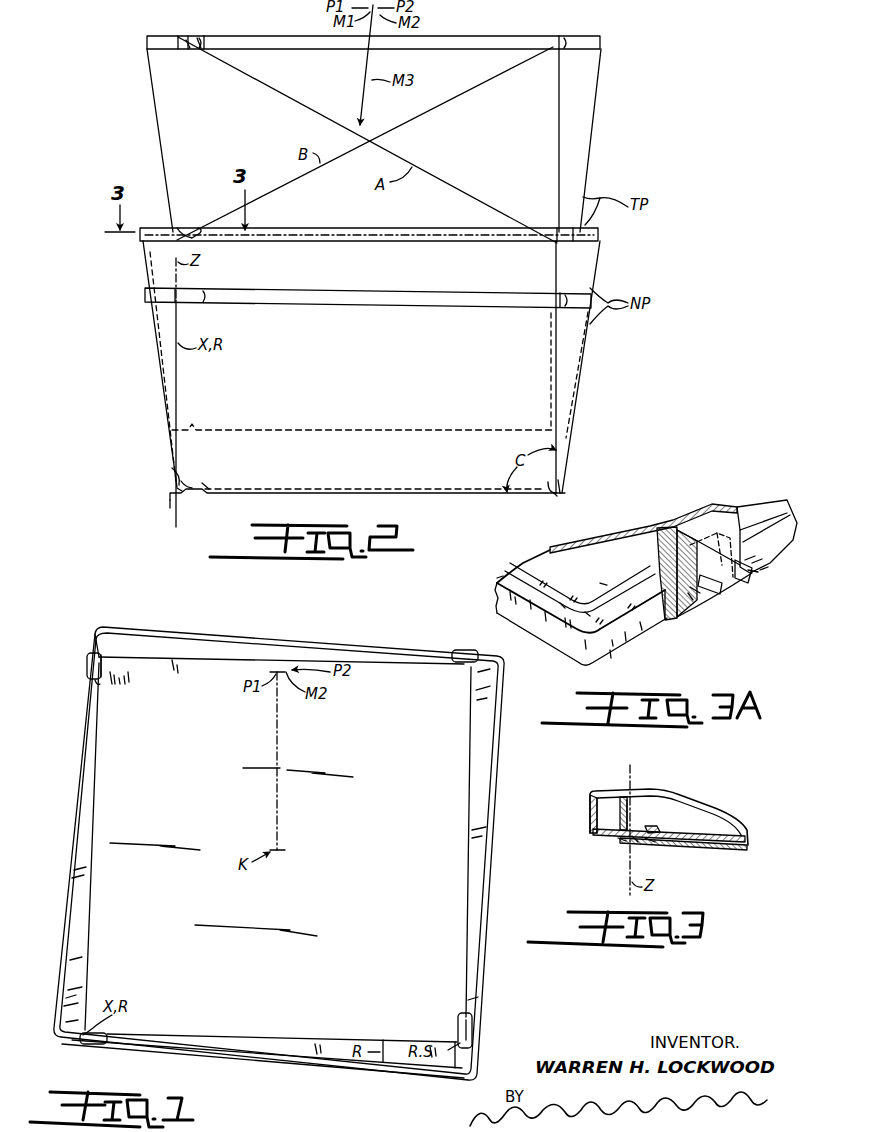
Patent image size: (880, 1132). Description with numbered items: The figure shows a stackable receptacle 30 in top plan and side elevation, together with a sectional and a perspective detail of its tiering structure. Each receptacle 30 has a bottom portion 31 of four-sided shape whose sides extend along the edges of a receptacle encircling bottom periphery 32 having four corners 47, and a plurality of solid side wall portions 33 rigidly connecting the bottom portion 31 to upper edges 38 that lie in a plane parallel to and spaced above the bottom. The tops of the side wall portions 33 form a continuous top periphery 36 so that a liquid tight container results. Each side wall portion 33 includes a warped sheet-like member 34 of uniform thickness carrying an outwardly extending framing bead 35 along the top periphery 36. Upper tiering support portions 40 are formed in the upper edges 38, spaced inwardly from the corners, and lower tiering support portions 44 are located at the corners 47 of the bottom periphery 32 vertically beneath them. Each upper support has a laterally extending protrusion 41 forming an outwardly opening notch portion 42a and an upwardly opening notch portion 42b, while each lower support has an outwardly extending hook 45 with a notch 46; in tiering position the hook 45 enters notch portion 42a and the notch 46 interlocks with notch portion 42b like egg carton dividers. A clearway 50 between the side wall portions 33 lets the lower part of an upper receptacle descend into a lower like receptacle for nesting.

In FIG. 2, the receptacle 30 is at (145, 315).
In FIG. 1, the receptacle 30 is at (302, 638).
In FIG. 2, the bottom portion 31 is at (417, 494).
In FIG. 1, the bottom portion 31 is at (373, 905).
In FIG. 2, the bottom periphery 32 is at (209, 494).
In FIG. 3a, the bottom periphery 32 is at (589, 607).
In FIG. 2, the side wall portion 33 is at (530, 122).
In FIG. 1, the side wall portion 33 is at (177, 648).
In FIG. 3a, the side wall portion 33 is at (768, 512).
In FIG. 3, the side wall portion 33 is at (627, 776).
In FIG. 2, the sheet-like member 34 is at (466, 152).
In FIG. 3, the sheet-like member 34 is at (723, 830).
In FIG. 2, the framing bead 35 is at (466, 36).
In FIG. 3a, the framing bead 35 is at (598, 658).
In FIG. 3, the framing bead 35 is at (720, 848).
In FIG. 2, the top periphery 36 is at (583, 48).
In FIG. 1, the top periphery 36 is at (96, 630).
In FIG. 3a, the top periphery 36 is at (617, 620).
In FIG. 3, the top periphery 36 is at (623, 813).
In FIG. 2, the upper edges 38 is at (270, 36).
In FIG. 1, the upper edges 38 is at (188, 635).
In FIG. 3a, the upper edges 38 is at (500, 582).
In FIG. 2, the upper tiering support portion 40 is at (210, 43).
In FIG. 1, the upper tiering support portion 40 is at (462, 656).
In FIG. 3a, the upper tiering support portion 40 is at (743, 568).
In FIG. 2, the protrusion 41 is at (188, 33).
In FIG. 1, the protrusion 41 is at (102, 670).
In FIG. 3a, the protrusion 41 is at (660, 529).
In FIG. 3, the protrusion 41 is at (635, 827).
In FIG. 2, the outwardly opening notch portion 42a is at (188, 38).
In FIG. 1, the outwardly opening notch portion 42a is at (467, 1036).
In FIG. 3a, the outwardly opening notch portion 42a is at (712, 582).
In FIG. 3, the outwardly opening notch portion 42a is at (620, 838).
In FIG. 2, the upwardly opening notch portion 42b is at (202, 37).
In FIG. 1, the upwardly opening notch portion 42b is at (98, 680).
In FIG. 3a, the upwardly opening notch portion 42b is at (755, 570).
In FIG. 3, the upwardly opening notch portion 42b is at (652, 828).
In FIG. 2, the lower tiering support portion 44 is at (184, 486).
In FIG. 3a, the lower tiering support portion 44 is at (690, 587).
In FIG. 2, the hook 45 is at (174, 483).
In FIG. 3a, the hook 45 is at (688, 594).
In FIG. 3, the hook 45 is at (635, 842).
In FIG. 2, the notch 46 is at (202, 483).
In FIG. 3a, the notch 46 is at (729, 542).
In FIG. 3, the notch 46 is at (647, 840).
In FIG. 2, the corner 47 is at (176, 488).
In FIG. 3a, the corner 47 is at (604, 584).
In FIG. 1, the clearway 50 is at (360, 838).
In FIG. 3a, the clearway 50 is at (594, 596).